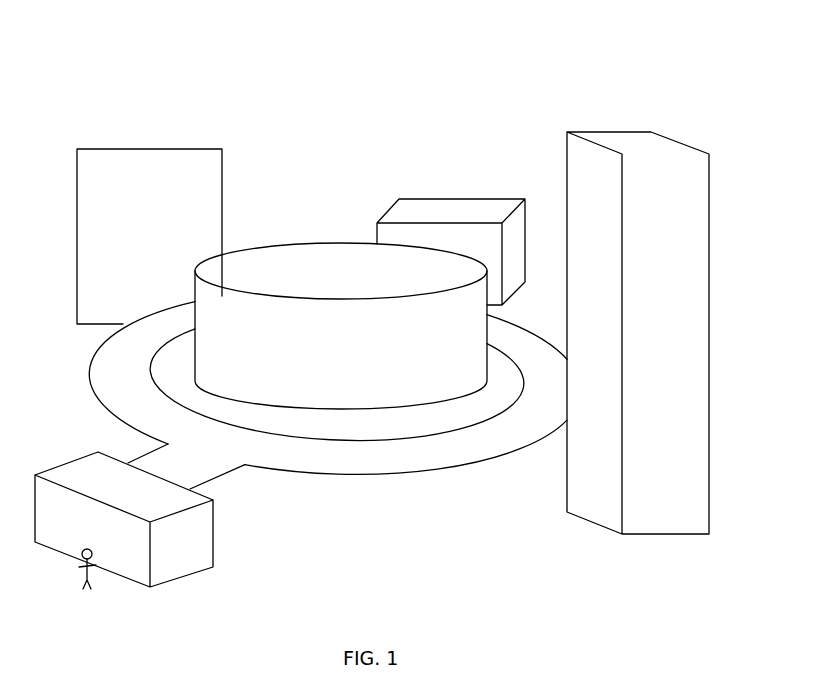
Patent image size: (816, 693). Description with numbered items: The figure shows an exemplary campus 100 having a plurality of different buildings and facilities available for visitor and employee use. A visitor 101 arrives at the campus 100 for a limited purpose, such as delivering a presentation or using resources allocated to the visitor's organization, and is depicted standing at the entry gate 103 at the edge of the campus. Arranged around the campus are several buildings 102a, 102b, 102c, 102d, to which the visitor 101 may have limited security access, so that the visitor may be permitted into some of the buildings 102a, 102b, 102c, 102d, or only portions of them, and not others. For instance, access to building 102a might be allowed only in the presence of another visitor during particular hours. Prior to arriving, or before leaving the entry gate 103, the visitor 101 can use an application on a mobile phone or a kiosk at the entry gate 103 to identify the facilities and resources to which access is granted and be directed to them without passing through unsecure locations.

The campus 100 is at (174, 61).
The visitor 101 is at (85, 579).
The building 102a is at (147, 148).
The building 102b is at (306, 243).
The building 102c is at (386, 212).
The building 102d is at (680, 143).
The entry gate 103 is at (186, 576).